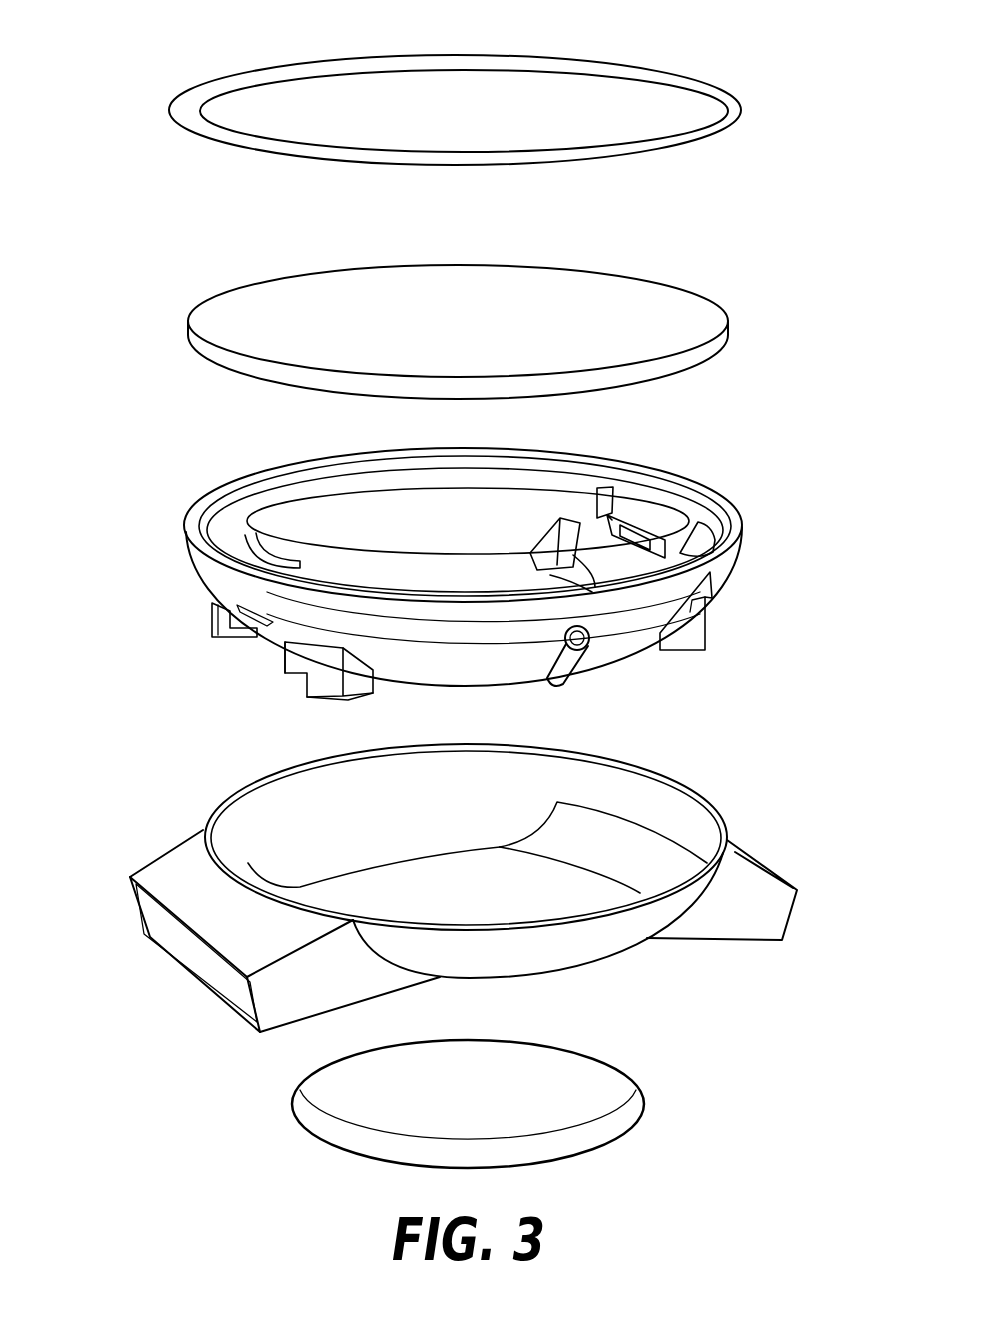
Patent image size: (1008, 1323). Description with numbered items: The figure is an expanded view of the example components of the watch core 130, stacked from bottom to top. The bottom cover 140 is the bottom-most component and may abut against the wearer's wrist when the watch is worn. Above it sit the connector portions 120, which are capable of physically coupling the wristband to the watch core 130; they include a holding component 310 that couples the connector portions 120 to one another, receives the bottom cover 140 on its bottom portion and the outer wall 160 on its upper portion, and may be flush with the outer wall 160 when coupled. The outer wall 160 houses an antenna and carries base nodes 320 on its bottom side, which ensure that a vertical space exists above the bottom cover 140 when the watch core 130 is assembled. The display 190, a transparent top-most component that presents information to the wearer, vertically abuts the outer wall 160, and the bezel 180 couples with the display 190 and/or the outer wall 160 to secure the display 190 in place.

The watch core 130 is at (122, 67).
The bezel 180 is at (268, 72).
The display 190 is at (268, 283).
The outer wall 160 is at (184, 530).
The base nodes 320 is at (605, 547).
The holding component 310 is at (228, 797).
The connector portions 120 is at (163, 853).
The bottom cover 140 is at (296, 1104).